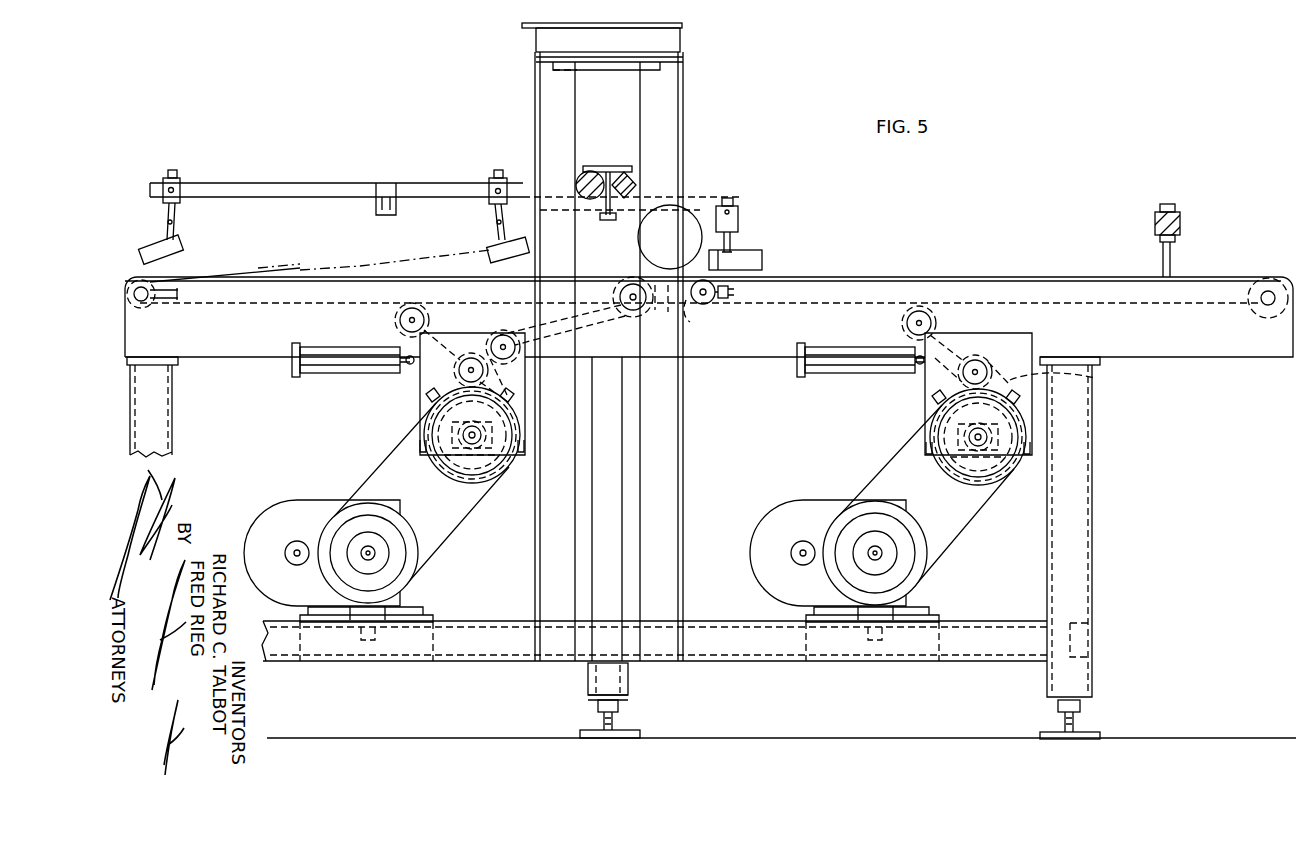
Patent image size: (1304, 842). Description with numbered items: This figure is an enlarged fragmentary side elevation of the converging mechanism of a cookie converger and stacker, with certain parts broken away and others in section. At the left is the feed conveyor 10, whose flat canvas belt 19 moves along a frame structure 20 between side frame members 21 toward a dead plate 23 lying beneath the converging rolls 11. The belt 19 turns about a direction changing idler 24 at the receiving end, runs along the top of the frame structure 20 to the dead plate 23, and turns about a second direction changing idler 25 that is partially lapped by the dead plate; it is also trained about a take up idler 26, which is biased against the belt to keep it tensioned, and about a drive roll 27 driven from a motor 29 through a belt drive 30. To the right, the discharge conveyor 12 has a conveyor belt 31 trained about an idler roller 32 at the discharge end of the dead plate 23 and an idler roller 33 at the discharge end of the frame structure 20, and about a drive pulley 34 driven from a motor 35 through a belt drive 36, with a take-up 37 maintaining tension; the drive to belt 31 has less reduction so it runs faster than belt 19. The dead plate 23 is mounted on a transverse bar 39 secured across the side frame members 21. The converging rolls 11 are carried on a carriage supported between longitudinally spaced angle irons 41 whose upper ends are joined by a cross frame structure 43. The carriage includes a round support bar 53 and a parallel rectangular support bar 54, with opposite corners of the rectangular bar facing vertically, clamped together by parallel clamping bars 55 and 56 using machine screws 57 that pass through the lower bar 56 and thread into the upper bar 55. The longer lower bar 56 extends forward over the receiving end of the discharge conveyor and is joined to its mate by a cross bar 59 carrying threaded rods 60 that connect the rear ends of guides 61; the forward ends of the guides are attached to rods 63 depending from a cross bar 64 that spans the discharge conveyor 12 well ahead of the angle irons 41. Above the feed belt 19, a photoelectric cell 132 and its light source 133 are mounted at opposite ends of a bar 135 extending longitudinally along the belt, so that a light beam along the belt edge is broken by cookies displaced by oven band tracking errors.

The feed conveyor 10 is at (132, 276).
The converging rolls 11 is at (690, 222).
The discharge conveyor 12 is at (1014, 277).
The canvas belt 19 is at (312, 270).
The frame structure 20 is at (178, 446).
The side frame member 21 is at (384, 278).
The dead plate 23 is at (710, 302).
The direction changing idler 24 is at (160, 278).
The direction changing idler 25 is at (620, 302).
The take up idler 26 is at (424, 340).
The drive roll 27 is at (530, 385).
The motor 29 is at (311, 500).
The belt drive 30 is at (438, 540).
The conveyor belt 31 is at (856, 277).
The idler roller 32 is at (692, 324).
The idler roller 33 is at (1262, 318).
The drive pulley 34 is at (1040, 378).
The motor 35 is at (826, 500).
The belt drive 36 is at (952, 536).
The take-up 37 is at (933, 345).
The transverse bar 39 is at (664, 312).
The angle irons 41 is at (684, 490).
The cross frame structure 43 is at (670, 24).
The round support bar 53 is at (590, 171).
The rectangular support bar 54 is at (630, 180).
The clamping bar 55 is at (617, 166).
The clamping bar 56 is at (594, 218).
The machine screws 57 is at (608, 218).
The cross bar 59 is at (738, 220).
The threaded rods 60 is at (731, 246).
The guides 61 is at (762, 262).
The rods 63 is at (1171, 255).
The cross bar 64 is at (1180, 220).
The photoelectric cells 132 is at (176, 248).
The light source 133 is at (494, 250).
The bar 135 is at (347, 183).